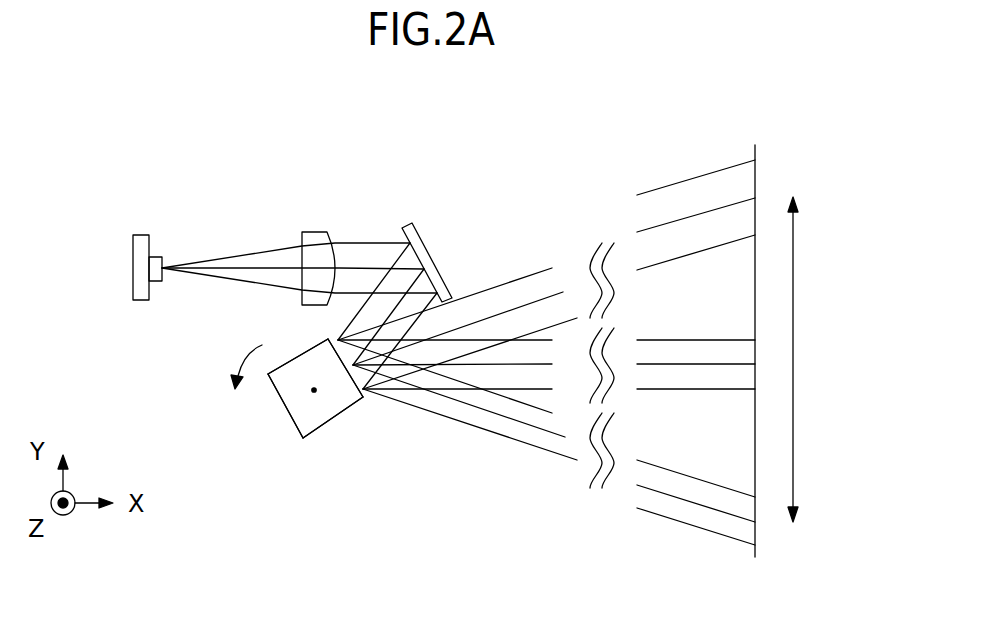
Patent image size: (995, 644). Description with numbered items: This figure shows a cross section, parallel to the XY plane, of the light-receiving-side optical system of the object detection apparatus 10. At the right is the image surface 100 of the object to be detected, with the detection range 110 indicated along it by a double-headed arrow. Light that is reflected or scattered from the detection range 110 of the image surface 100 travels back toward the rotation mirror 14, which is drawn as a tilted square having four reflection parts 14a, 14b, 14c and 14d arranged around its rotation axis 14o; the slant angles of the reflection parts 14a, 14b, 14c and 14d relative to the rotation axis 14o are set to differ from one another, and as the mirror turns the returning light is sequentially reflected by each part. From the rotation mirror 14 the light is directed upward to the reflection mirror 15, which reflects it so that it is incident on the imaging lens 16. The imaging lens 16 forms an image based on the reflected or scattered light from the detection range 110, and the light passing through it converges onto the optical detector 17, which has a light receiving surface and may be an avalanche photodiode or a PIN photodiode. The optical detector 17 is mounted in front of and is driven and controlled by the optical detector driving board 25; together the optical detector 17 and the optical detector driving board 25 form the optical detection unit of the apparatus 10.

The object detection apparatus 10 is at (94, 158).
The optical detector driving board 25 is at (143, 235).
The optical detector 17 is at (155, 257).
The imaging lens 16 is at (313, 232).
The reflection mirror 15 is at (407, 226).
The rotation mirror 14 is at (321, 412).
The reflection part 14a is at (364, 397).
The reflection part 14b is at (289, 362).
The reflection part 14c is at (292, 422).
The reflection part 14d is at (330, 423).
The rotation axis 14o is at (312, 391).
The image surface 100 is at (756, 153).
The detection range 110 is at (794, 345).